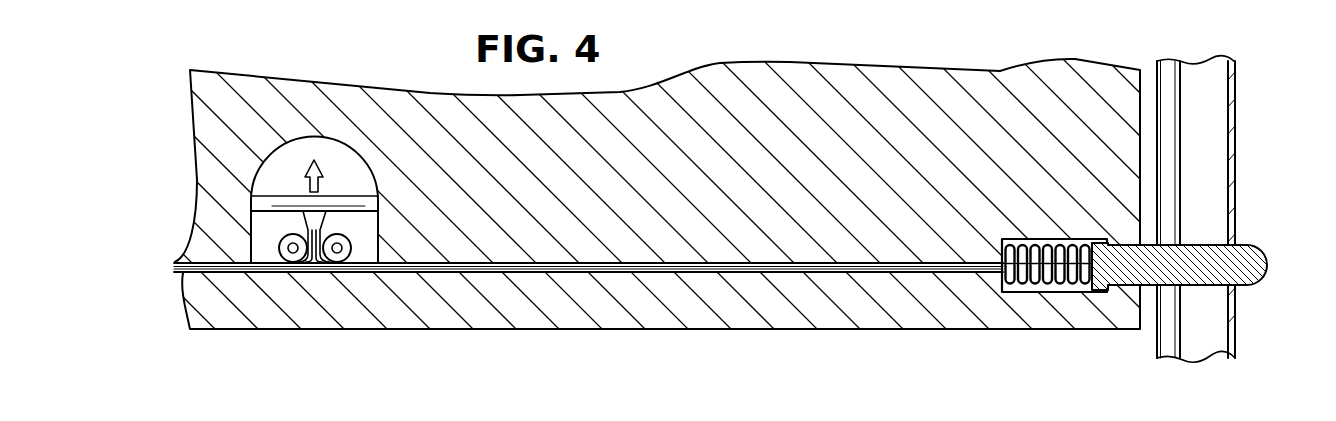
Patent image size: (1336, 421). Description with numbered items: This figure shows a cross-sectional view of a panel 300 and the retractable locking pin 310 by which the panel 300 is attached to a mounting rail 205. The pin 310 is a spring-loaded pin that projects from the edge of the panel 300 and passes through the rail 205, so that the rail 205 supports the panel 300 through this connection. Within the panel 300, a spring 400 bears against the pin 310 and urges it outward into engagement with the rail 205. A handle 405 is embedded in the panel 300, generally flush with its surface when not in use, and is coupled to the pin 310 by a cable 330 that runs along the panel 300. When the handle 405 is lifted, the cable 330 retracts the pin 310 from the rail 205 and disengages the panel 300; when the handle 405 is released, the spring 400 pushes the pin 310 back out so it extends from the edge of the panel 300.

The mounting rail 205 is at (1236, 112).
The panel 300 is at (757, 330).
The locking pin 310 is at (1252, 268).
The cable 330 is at (584, 270).
The spring 400 is at (1044, 292).
The handle 405 is at (349, 200).